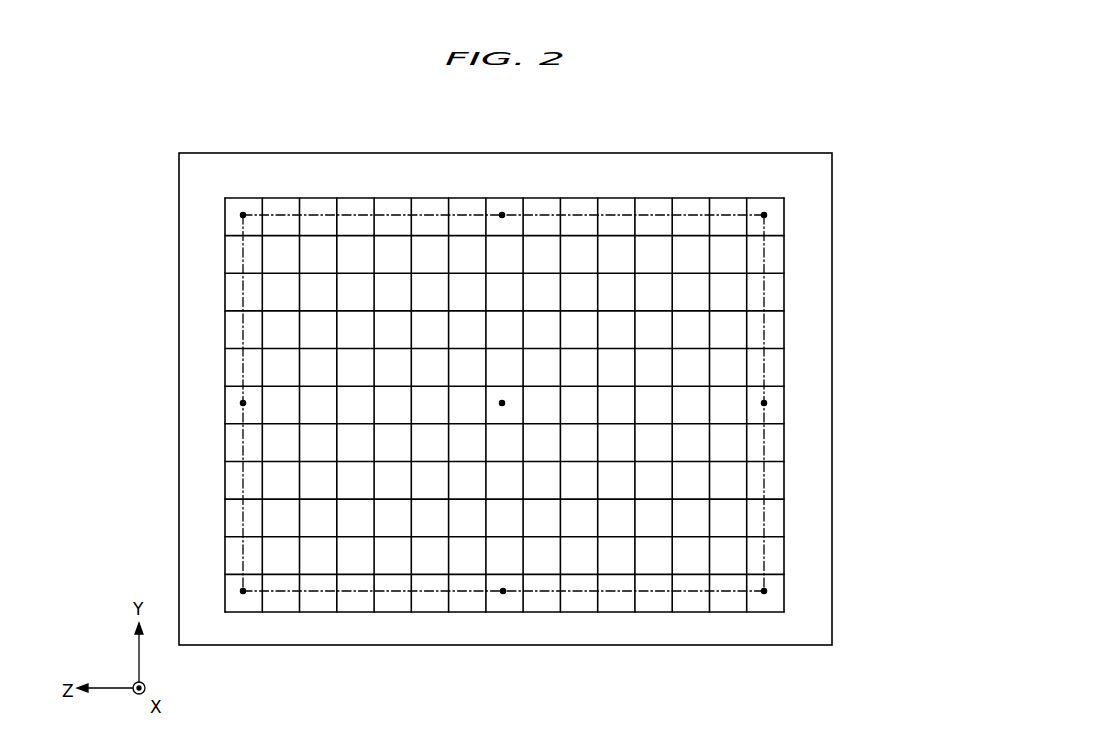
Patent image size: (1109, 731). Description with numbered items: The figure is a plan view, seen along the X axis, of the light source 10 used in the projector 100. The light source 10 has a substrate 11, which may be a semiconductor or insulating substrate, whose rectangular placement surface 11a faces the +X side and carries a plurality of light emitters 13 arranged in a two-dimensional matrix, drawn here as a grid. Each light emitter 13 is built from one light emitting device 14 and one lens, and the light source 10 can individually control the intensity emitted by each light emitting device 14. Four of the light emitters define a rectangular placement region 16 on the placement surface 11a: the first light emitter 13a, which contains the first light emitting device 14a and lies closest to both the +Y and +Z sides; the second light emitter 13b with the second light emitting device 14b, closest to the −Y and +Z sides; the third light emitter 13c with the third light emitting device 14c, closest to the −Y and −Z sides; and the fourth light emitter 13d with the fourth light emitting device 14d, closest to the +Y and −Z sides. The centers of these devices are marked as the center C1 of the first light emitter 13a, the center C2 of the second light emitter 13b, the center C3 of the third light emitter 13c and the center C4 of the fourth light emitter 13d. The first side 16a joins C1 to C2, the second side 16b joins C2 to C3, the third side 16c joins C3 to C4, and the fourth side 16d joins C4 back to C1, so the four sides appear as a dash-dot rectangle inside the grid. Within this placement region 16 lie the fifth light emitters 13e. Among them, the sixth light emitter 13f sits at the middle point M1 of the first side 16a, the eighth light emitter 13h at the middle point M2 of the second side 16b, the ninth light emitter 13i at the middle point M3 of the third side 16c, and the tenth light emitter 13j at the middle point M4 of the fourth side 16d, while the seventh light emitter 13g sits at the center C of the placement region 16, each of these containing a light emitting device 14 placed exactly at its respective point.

The projector 100 is at (880, 120).
The light source 10 is at (820, 140).
The substrate 11 is at (815, 283).
The placement surface 11a is at (559, 399).
The light emitters 13 is at (499, 398).
The first light emitter 13a is at (235, 227).
The second light emitter 13b is at (232, 585).
The third light emitter 13c is at (772, 583).
The fourth light emitter 13d is at (773, 228).
The fifth light emitters 13e is at (280, 293).
The sixth light emitter 13f is at (240, 412).
The seventh light emitter 13g is at (512, 412).
The eighth light emitter 13h is at (495, 603).
The ninth light emitter 13i is at (775, 413).
The tenth light emitter 13j is at (498, 210).
The light emitting device 14 is at (499, 384).
The first light emitting device 14a is at (240, 213).
The second light emitting device 14b is at (243, 592).
The third light emitting device 14c is at (767, 592).
The fourth light emitting device 14d is at (768, 213).
The placement region 16 is at (574, 207).
The first side 16a is at (243, 333).
The second side 16b is at (648, 594).
The third side 16c is at (767, 332).
The fourth side 16d is at (615, 207).
The center of the placement region C is at (502, 403).
The center of the first light emitter C1 is at (243, 212).
The center of the second light emitter C2 is at (244, 605).
The center of the third light emitter C3 is at (764, 605).
The center of the fourth light emitter C4 is at (764, 212).
The middle point of the first side M1 is at (243, 403).
The middle point of the second side M2 is at (503, 594).
The middle point of the third side M3 is at (765, 403).
The middle point of the fourth side M4 is at (502, 210).